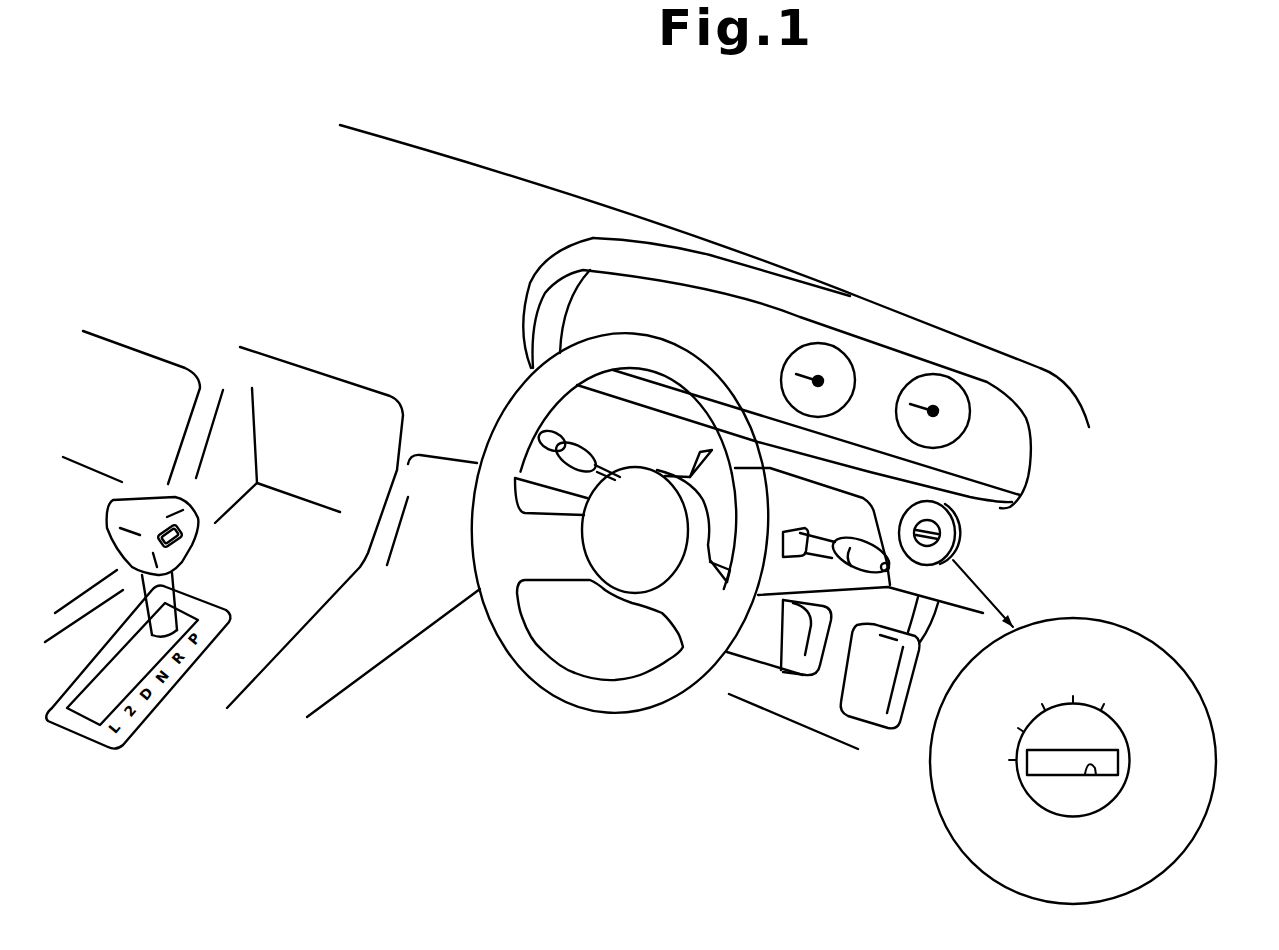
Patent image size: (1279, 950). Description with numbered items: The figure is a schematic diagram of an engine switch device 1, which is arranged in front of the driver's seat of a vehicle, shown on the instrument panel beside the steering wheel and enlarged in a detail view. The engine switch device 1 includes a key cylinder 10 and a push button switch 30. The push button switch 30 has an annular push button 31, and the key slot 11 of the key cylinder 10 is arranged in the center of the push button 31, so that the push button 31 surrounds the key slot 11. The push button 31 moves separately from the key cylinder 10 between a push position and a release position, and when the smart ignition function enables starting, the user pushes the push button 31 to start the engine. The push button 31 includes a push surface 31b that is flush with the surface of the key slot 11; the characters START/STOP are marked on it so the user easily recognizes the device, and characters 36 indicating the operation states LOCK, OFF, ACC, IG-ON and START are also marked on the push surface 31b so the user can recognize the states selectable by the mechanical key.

The engine switch device 1 is at (967, 533).
The key cylinder 10 is at (1052, 778).
The key slot 11 is at (1096, 775).
The push button switch 30 is at (1153, 642).
The push button 31 is at (1195, 737).
The push surface 31b is at (1190, 822).
The characters 36 is at (997, 688).